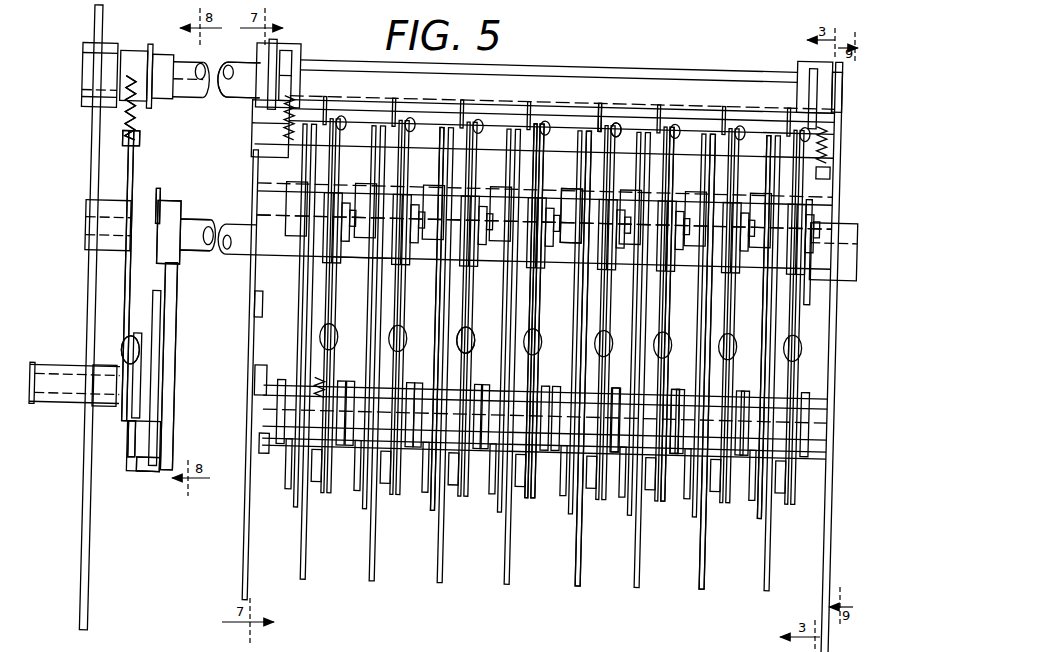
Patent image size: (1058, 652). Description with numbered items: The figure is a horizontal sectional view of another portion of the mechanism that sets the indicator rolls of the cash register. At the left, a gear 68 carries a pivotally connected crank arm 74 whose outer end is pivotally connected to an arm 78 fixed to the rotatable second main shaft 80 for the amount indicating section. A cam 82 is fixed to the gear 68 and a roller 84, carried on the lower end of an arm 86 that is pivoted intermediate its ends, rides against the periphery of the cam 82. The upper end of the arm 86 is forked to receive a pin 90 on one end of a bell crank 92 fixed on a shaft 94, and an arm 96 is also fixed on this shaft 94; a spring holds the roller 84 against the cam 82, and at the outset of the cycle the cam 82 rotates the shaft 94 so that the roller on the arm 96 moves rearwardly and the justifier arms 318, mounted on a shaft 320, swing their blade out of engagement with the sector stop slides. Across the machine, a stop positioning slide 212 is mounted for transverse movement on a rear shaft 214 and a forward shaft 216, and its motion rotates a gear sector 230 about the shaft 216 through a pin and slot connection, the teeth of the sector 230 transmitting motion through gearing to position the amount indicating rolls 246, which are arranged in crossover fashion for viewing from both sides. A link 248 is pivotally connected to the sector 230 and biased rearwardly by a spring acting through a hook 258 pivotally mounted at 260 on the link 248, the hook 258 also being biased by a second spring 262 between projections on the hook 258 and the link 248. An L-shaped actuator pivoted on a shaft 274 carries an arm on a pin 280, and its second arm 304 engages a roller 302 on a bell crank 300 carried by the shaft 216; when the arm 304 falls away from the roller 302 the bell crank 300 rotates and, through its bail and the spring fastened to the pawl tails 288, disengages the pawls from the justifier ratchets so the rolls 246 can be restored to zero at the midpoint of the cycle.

The gear 68 is at (140, 462).
The crank arm 74 is at (172, 333).
The arm 78 is at (159, 192).
The second main shaft 80 is at (203, 225).
The cam 82 is at (135, 440).
The roller 84 is at (134, 335).
The arm 86 is at (133, 170).
The pin 90 is at (127, 134).
The bell crank 92 is at (140, 120).
The shaft 94 is at (238, 84).
The arm 96 is at (290, 62).
The stop positioning slide 212 is at (702, 328).
The rear shaft 214 is at (628, 138).
The forward shaft 216 is at (668, 435).
The gear sector 230 is at (580, 552).
The amount indicating rolls 246 is at (124, 328).
The link 248 is at (528, 372).
The hook 258 is at (528, 300).
The pivotal mounting 260 is at (470, 345).
The second spring 262 is at (322, 392).
The shaft 274 is at (362, 250).
The pin 280 is at (550, 200).
The tails 288 is at (758, 492).
The bell crank 300 is at (270, 452).
The roller 302 is at (262, 375).
The second arm 304 is at (256, 312).
The justifier arm 318 is at (294, 48).
The shaft 320 is at (670, 73).